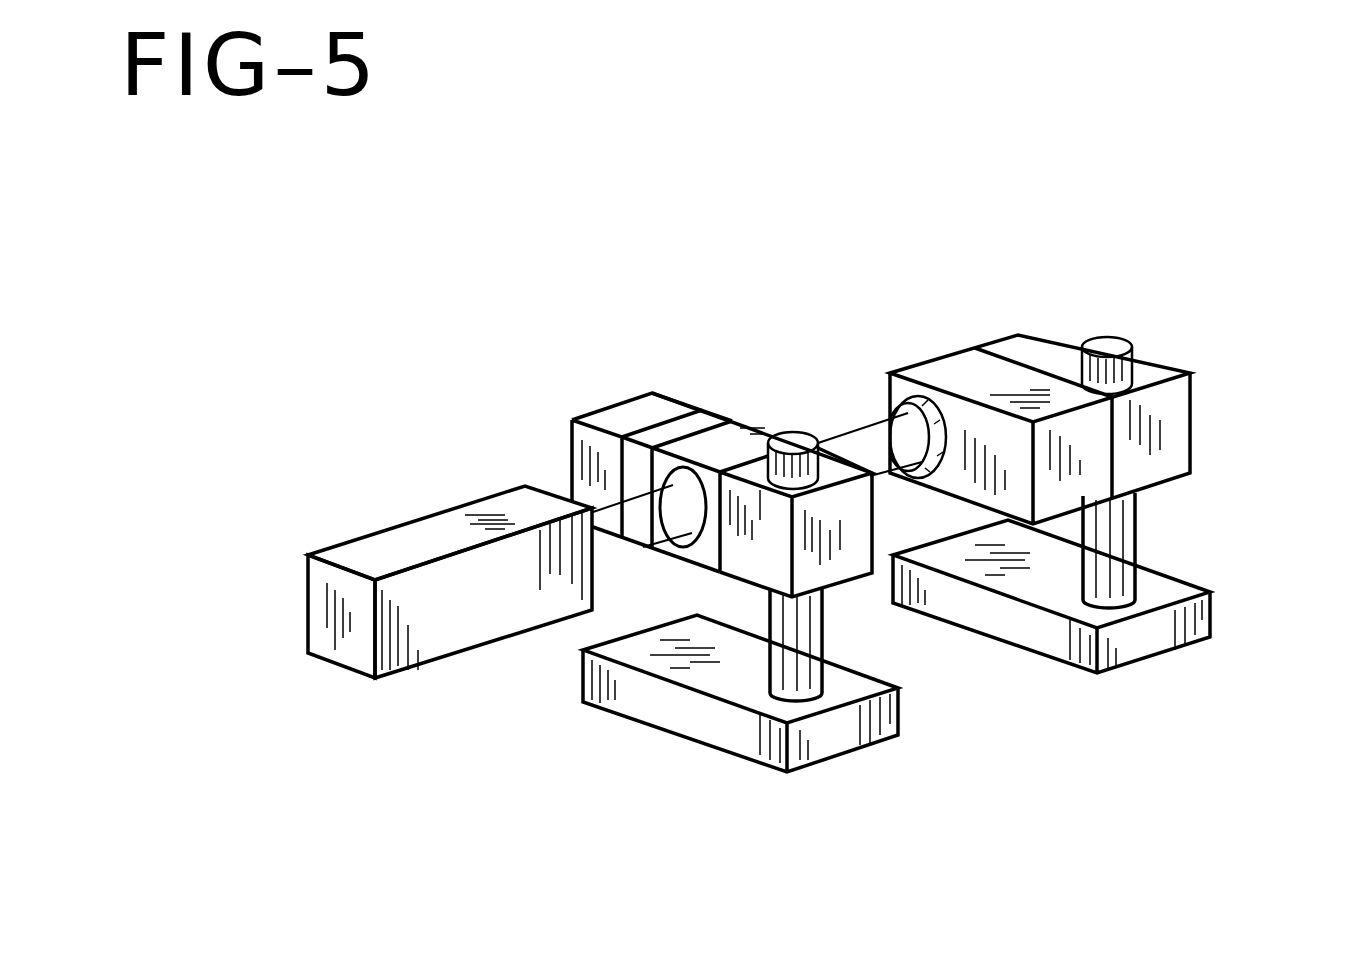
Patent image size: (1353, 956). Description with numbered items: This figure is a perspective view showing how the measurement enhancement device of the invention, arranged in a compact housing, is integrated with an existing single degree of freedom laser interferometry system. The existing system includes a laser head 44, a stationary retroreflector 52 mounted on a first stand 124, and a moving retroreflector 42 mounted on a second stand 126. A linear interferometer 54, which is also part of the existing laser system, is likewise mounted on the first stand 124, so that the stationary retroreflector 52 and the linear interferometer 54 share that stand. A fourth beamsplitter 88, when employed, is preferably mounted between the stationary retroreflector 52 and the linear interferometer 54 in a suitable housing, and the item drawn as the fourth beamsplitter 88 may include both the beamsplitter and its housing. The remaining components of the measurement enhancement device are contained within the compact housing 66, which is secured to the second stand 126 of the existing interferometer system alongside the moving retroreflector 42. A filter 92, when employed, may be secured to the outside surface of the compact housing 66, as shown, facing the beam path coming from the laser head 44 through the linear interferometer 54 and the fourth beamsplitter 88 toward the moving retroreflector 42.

The moving retroreflector 42 is at (1025, 353).
The laser head 44 is at (420, 543).
The stationary retroreflector 52 is at (588, 458).
The linear interferometer 54 is at (733, 440).
The compact housing 66 is at (1073, 448).
The fourth beamsplitter 88 is at (688, 430).
The filter 92 is at (897, 408).
The first stand 124 is at (850, 725).
The second stand 126 is at (1162, 628).